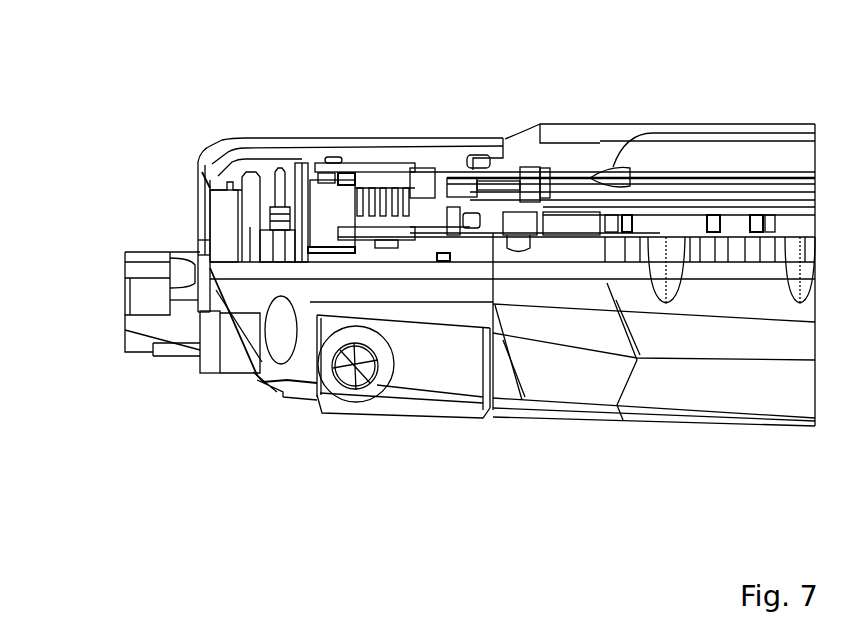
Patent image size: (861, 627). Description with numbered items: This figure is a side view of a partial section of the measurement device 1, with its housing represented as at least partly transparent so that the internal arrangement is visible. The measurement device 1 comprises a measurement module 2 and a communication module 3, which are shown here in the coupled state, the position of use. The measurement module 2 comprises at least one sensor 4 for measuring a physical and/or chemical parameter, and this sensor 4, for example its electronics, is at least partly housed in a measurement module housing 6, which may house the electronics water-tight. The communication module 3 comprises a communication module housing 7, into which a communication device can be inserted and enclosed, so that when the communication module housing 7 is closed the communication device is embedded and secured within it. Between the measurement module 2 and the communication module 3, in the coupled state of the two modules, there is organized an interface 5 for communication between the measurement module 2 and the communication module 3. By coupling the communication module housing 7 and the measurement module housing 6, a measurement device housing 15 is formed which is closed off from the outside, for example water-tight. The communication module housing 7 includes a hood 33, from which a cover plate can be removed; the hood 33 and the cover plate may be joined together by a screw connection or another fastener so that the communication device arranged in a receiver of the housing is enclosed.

The measurement device 1 is at (775, 70).
The measurement module 2 is at (70, 342).
The communication module 3 is at (98, 140).
The sensor 4 is at (63, 268).
The interface 5 is at (565, 213).
The measurement module housing 6 is at (279, 388).
The communication module housing 7 is at (508, 133).
The measurement device housing 15 is at (98, 204).
The hood 33 is at (628, 127).